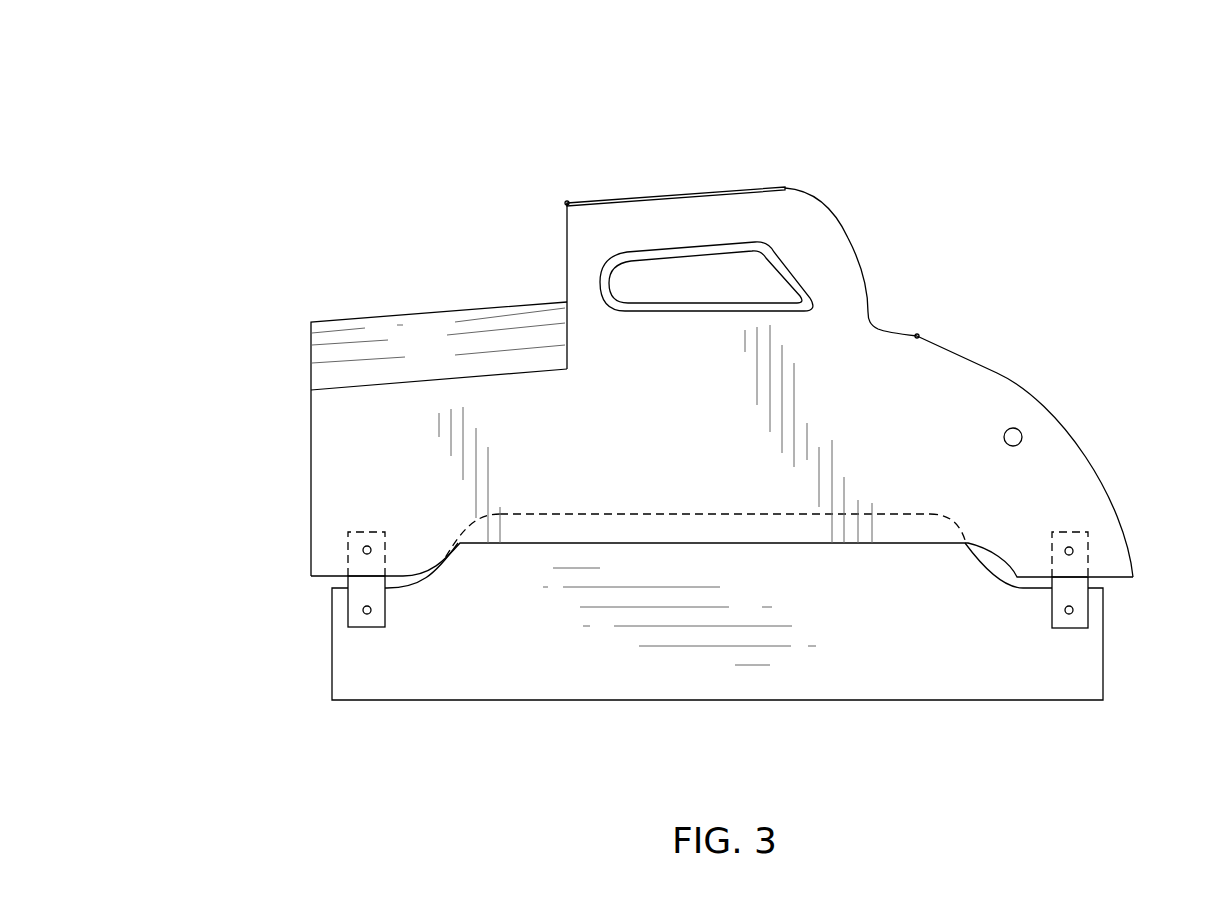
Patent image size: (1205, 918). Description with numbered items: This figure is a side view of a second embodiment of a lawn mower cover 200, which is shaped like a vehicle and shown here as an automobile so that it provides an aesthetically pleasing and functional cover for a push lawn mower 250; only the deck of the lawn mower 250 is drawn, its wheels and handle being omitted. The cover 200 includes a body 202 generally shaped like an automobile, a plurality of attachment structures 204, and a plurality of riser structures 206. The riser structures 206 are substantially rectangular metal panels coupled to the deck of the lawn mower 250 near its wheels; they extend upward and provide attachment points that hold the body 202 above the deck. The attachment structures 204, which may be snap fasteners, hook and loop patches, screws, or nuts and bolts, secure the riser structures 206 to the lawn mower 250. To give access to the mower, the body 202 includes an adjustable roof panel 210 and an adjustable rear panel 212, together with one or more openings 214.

The lawn mower cover 200 is at (283, 81).
The body 202 is at (690, 441).
The attachment structures 204 is at (363, 550).
The riser structures 206 is at (385, 608).
The adjustable roof panel 210 is at (667, 192).
The adjustable rear panel 212 is at (997, 372).
The opening 214 is at (765, 267).
The lawn mower 250 is at (918, 630).